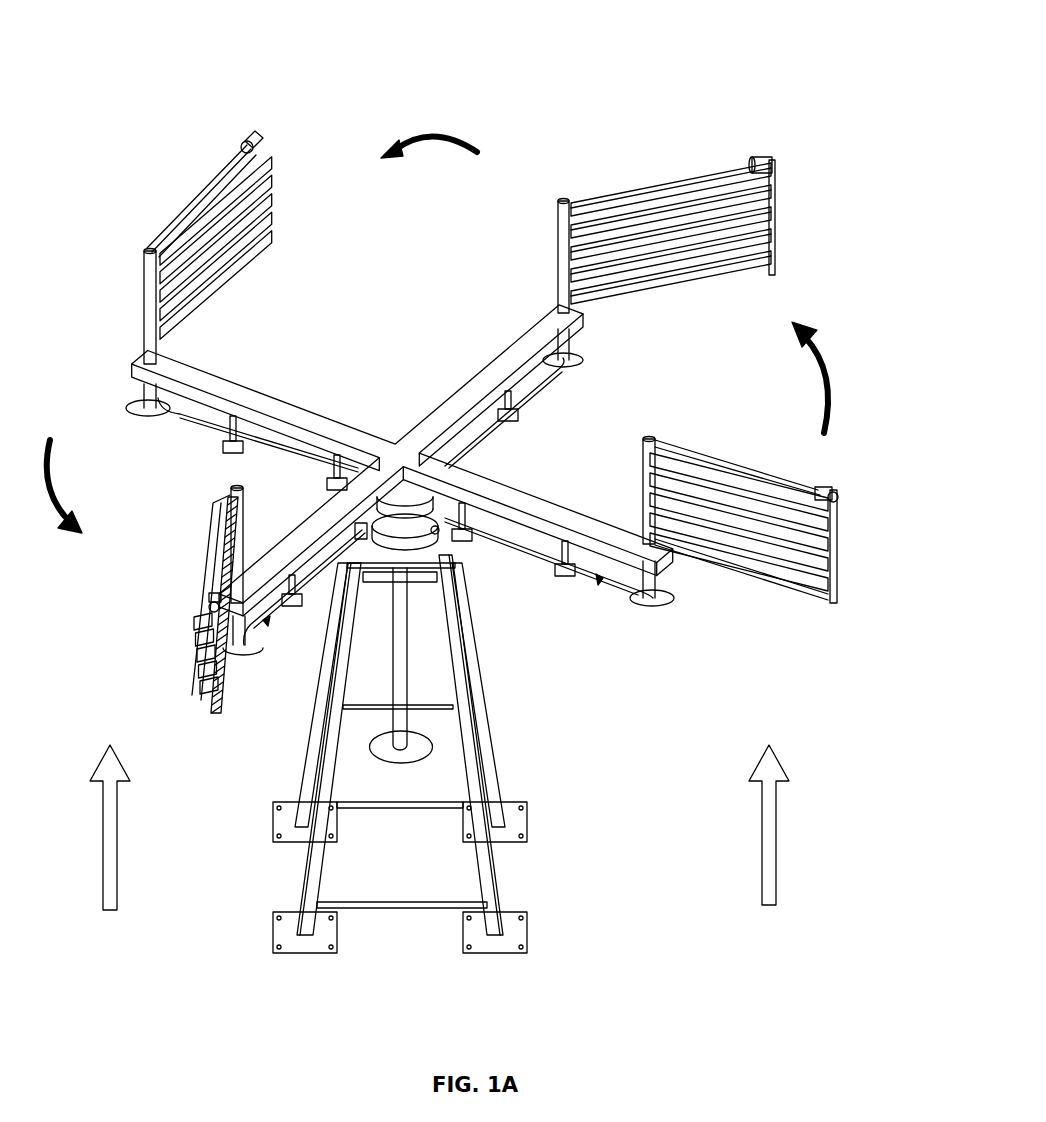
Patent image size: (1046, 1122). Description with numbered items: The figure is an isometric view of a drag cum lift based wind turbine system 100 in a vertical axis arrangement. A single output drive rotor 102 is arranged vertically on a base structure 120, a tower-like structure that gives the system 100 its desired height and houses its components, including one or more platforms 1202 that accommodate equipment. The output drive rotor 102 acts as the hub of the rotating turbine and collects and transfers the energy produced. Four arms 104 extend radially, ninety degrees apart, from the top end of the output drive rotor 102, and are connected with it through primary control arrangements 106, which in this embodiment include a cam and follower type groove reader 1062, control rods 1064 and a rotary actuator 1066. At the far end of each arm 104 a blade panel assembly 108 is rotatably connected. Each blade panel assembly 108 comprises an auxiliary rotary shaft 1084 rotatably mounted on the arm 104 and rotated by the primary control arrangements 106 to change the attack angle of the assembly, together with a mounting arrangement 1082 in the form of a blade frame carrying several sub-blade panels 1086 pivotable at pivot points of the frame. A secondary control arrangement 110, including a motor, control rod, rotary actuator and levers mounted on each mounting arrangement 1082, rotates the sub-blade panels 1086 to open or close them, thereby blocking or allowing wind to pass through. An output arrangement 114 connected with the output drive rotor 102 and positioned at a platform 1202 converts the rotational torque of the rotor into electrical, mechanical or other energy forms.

The system 100 is at (122, 86).
The output drive rotor 102 is at (400, 710).
The arm 104 is at (443, 477).
The primary control arrangement 106 is at (673, 677).
The groove reader 1062 is at (410, 522).
The control rod 1064 is at (507, 547).
The rotary actuator 1066 is at (650, 607).
The blade panel assembly 108 is at (786, 155).
The mounting arrangement 1082 is at (188, 208).
The auxiliary rotary shaft 1084 is at (150, 308).
The sub-blade panel 1086 is at (227, 238).
The secondary control arrangement 110 is at (242, 143).
The output arrangement 114 is at (412, 752).
The base structure 120 is at (495, 886).
The platform 1202 is at (390, 780).